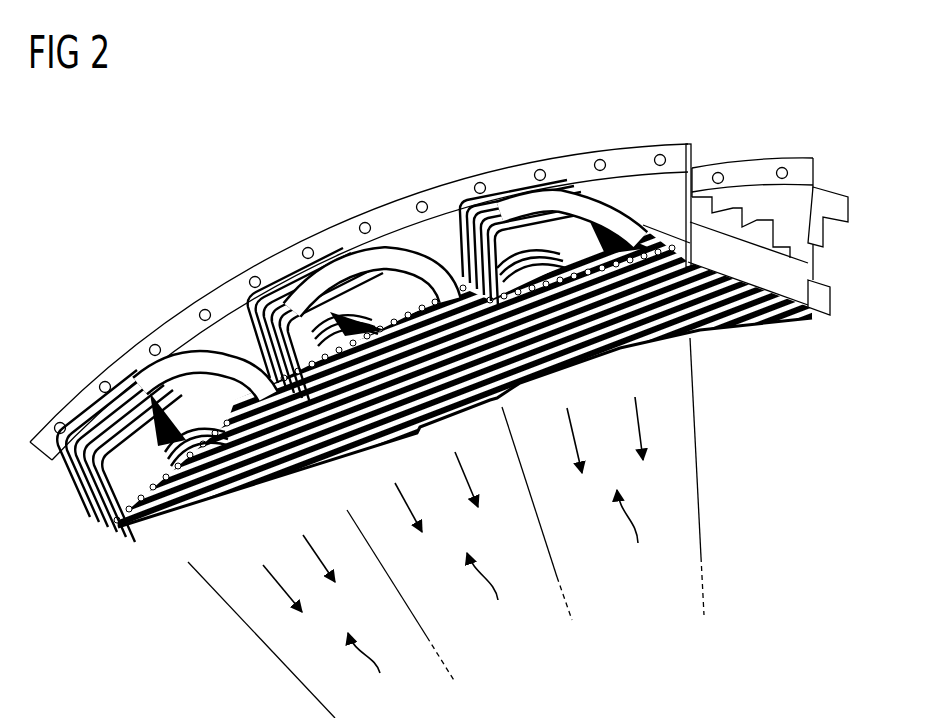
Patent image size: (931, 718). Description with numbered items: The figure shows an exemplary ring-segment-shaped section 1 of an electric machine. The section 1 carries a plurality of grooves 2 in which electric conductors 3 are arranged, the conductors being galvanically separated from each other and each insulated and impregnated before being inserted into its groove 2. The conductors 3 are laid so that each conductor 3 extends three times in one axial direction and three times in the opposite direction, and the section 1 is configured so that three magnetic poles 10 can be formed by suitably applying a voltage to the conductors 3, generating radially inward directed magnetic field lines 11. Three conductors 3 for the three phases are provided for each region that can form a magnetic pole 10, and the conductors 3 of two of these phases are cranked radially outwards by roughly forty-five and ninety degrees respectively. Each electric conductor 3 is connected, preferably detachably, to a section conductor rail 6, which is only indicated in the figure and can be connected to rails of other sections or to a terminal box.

The ring-segment-shaped section 1 is at (405, 237).
The groove 2 is at (673, 233).
The electric conductor 3 is at (513, 200).
The section conductor rail 6 is at (835, 207).
The magnetic pole 10 is at (500, 599).
The magnetic field line 11 is at (282, 583).